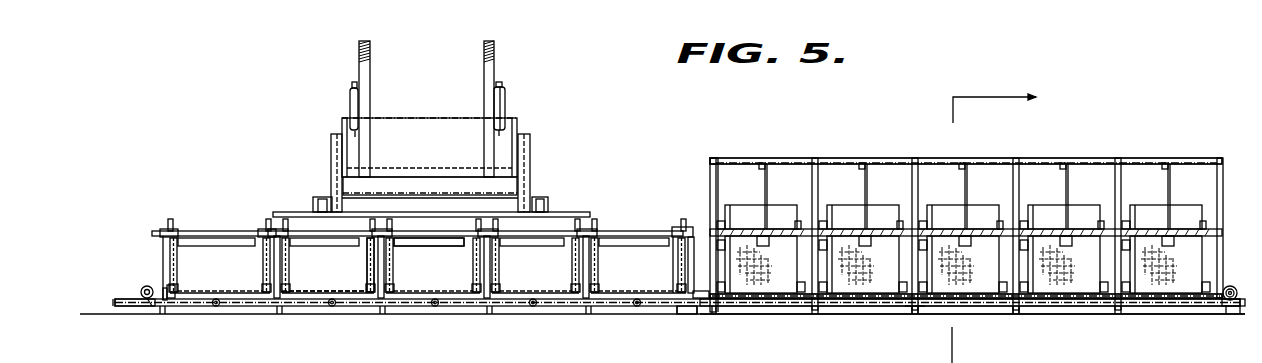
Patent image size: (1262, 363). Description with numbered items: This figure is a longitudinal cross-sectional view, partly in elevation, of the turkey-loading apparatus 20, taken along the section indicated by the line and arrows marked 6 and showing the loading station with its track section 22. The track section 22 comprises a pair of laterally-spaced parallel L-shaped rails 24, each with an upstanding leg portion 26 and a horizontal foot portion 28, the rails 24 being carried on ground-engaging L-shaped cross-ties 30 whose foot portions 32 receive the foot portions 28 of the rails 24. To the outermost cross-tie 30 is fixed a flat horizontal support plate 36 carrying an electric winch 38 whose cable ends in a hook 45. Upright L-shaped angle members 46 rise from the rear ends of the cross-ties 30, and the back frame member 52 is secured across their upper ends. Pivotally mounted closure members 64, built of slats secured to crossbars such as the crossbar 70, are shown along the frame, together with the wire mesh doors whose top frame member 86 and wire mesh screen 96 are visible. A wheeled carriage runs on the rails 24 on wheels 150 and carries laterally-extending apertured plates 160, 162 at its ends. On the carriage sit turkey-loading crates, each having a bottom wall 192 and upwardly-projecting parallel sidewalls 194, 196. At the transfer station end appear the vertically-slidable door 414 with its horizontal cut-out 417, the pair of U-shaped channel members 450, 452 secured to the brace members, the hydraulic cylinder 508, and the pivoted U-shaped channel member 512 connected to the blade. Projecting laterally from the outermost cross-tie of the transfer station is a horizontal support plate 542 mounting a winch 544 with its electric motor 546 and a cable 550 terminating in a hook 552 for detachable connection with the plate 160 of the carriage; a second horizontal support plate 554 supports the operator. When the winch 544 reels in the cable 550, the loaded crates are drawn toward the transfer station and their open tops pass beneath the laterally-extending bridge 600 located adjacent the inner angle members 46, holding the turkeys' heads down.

The section line 6- 6 is at (994, 228).
The turkey-loading apparatus 20 is at (698, 153).
The track section 22 is at (1150, 316).
The L-shaped rails 24 is at (1098, 316).
The leg portion 26 is at (1072, 300).
The foot portion 28 is at (1042, 299).
The cross-ties 30 is at (914, 317).
The foot portions of cross-ties 32 is at (914, 318).
The support plate 36 is at (1241, 313).
The electric winch 38 is at (1233, 287).
The hook 45 is at (698, 292).
The L-shaped angle member 46 is at (710, 178).
The back frame member 52 is at (745, 160).
The closure members 64 is at (792, 227).
The crossbar 70 is at (956, 265).
The top frame member 86 is at (779, 205).
The wire mesh screen 96 is at (776, 293).
The wheels 150 is at (345, 310).
The plate 160 is at (172, 306).
The plate 162 is at (680, 314).
The bottom wall 192 is at (319, 291).
The sidewall 194 is at (283, 268).
The sidewall 196 is at (366, 258).
The door 414 is at (406, 277).
The cut-out 417 is at (444, 247).
The U-shaped channel member 450 is at (545, 198).
The U-shaped channel member 452 is at (312, 200).
The hydraulic cylinder 508 is at (349, 100).
The U-shaped channel member 512 is at (332, 151).
The support plate 542 is at (115, 303).
The winch 544 is at (141, 291).
The electric motor 546 is at (165, 290).
The cable 550 is at (147, 300).
The hook 552 is at (163, 290).
The second horizontal support plate 554 is at (118, 308).
The bridge 600 is at (693, 226).